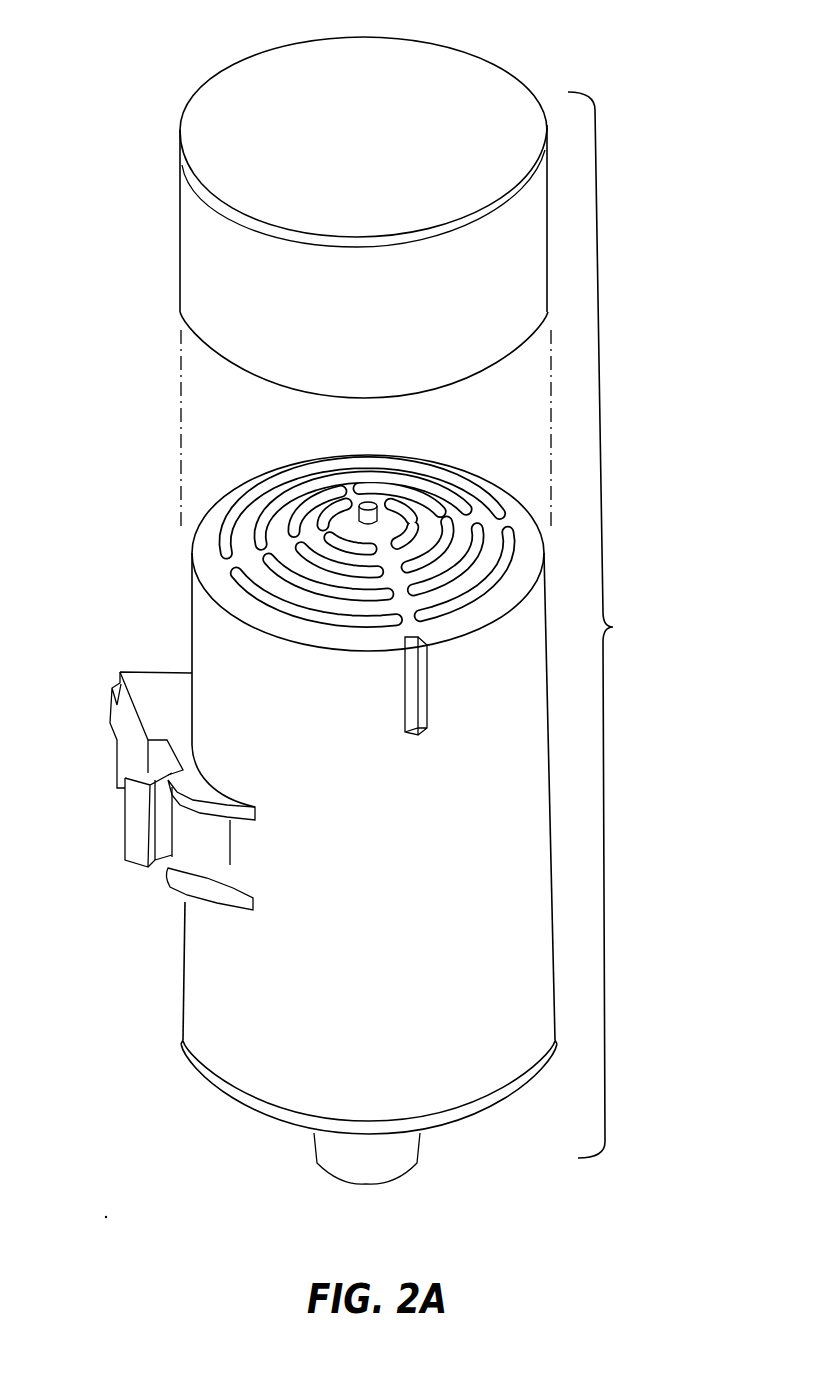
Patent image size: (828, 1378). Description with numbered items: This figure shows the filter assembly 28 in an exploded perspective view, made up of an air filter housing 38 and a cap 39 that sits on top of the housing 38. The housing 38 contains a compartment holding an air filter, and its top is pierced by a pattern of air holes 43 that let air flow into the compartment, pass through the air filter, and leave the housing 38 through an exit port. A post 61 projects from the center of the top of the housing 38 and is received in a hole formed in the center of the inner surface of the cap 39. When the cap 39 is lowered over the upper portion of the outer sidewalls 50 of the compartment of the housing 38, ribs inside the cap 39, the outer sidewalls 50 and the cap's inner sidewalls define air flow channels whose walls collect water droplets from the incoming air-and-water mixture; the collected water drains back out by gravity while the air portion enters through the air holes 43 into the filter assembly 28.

The filter assembly 28 is at (609, 625).
The air filter housing 38 is at (493, 1098).
The cap 39 is at (383, 348).
The air holes 43 is at (428, 486).
The outer sidewalls 50 is at (390, 1003).
The post 61 is at (365, 504).